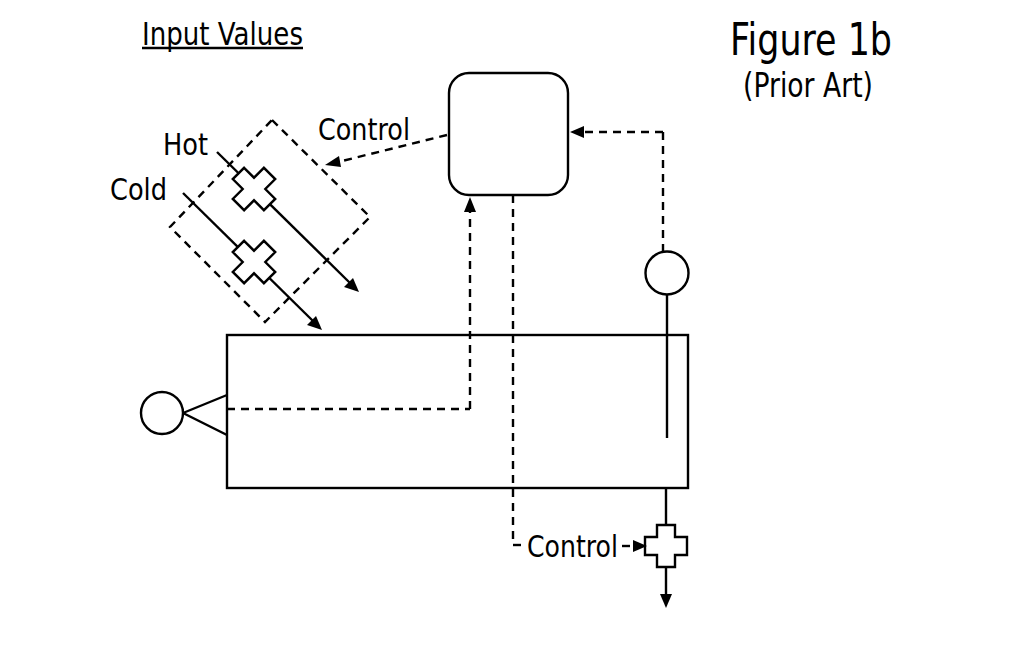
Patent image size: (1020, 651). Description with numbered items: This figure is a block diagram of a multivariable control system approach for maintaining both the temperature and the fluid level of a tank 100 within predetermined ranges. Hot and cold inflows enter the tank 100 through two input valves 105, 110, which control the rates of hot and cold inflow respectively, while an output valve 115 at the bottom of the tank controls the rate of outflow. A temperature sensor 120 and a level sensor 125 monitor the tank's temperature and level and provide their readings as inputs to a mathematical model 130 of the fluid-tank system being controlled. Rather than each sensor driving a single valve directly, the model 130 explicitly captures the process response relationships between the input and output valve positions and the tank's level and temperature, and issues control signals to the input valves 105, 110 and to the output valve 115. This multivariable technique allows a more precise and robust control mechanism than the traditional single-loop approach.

The tank 100 is at (457, 411).
The hot water input valve 105 is at (288, 222).
The cold input valve 110 is at (252, 261).
The output valve 115 is at (754, 548).
The temperature sensor 120 is at (755, 327).
The level sensor 125 is at (124, 387).
The model 130 is at (508, 134).